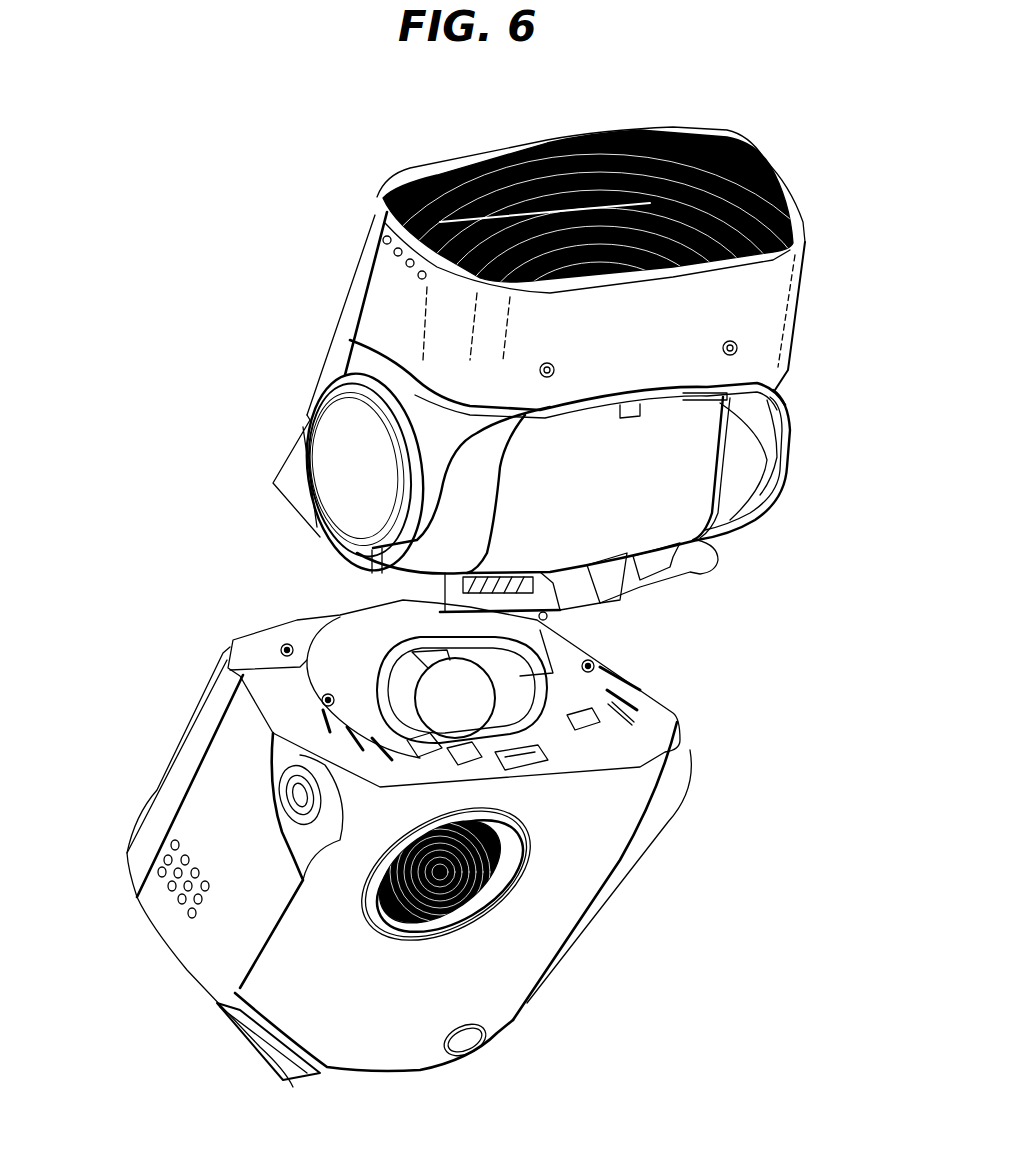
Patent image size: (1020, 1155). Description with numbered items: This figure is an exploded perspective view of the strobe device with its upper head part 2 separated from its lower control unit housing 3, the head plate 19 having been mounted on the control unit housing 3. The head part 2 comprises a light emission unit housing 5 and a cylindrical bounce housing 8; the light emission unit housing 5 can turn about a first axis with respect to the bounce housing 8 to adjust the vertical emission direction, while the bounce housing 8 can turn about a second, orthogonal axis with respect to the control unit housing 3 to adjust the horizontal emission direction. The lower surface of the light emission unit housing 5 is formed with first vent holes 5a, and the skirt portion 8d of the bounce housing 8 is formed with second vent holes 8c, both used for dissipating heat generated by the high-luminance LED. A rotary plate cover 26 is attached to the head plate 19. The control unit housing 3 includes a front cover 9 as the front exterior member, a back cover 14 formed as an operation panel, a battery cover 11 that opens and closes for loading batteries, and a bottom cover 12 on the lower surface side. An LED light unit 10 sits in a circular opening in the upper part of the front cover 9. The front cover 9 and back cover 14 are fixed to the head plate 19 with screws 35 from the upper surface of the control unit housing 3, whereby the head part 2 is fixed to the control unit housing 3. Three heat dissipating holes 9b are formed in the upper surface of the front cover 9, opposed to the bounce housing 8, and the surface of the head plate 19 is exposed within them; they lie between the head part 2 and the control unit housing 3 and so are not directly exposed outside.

The head part 2 is at (272, 383).
The light emission unit housing 5 is at (343, 348).
The first vent holes 5a is at (563, 413).
The bounce housing 8 is at (660, 513).
The second vent holes 8c is at (537, 583).
The skirt portion 8d is at (523, 600).
The control unit housing 3 is at (126, 797).
The back cover 14 is at (247, 650).
The screws 35 is at (283, 645).
The rotary plate cover 26 is at (493, 687).
The head plate 19 is at (535, 683).
The heat dissipating holes 9b is at (587, 727).
The front cover 9 is at (497, 983).
The LED light unit 10 is at (477, 873).
The battery cover 11 is at (177, 930).
The bottom cover 12 is at (240, 1023).